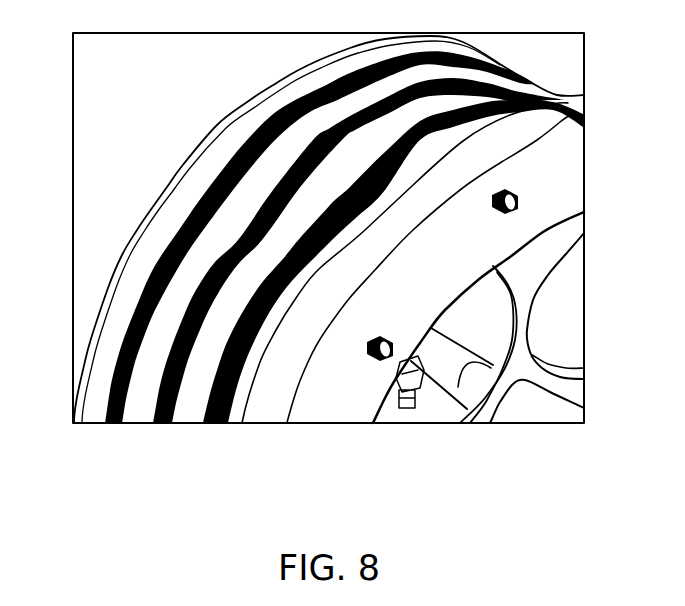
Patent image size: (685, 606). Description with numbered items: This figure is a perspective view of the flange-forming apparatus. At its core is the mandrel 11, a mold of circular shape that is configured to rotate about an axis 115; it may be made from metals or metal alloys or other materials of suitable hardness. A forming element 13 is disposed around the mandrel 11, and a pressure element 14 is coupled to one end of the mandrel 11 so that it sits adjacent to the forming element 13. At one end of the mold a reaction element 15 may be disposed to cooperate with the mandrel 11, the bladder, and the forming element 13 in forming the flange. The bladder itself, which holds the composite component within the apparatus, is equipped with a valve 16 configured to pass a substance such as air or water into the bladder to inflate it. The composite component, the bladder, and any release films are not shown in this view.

The mandrel 11 is at (534, 256).
The forming element 13 is at (197, 402).
The pressure element 14 is at (270, 405).
The reaction element 15 is at (157, 197).
The valve 16 is at (397, 407).
The axis 115 is at (452, 366).